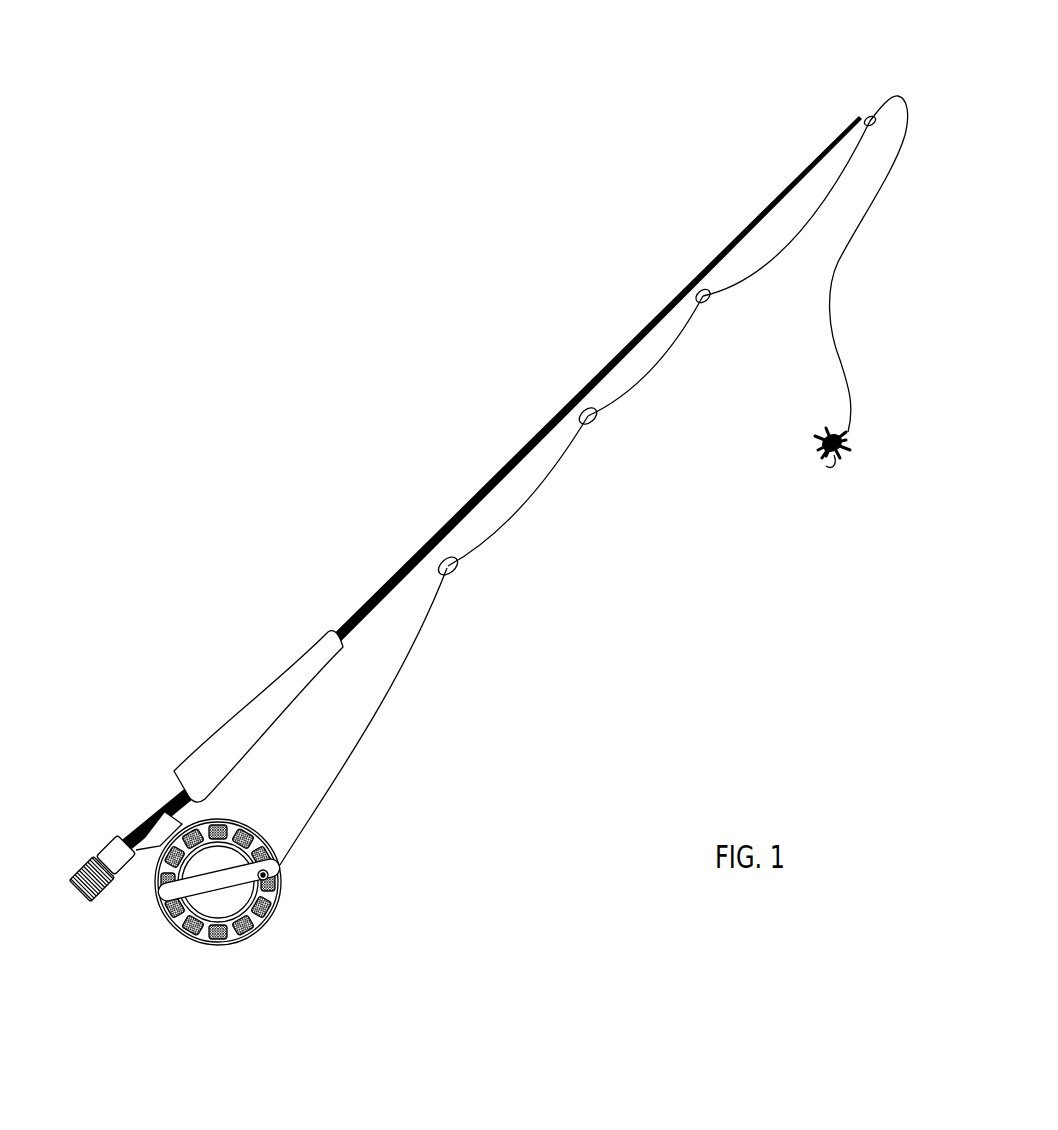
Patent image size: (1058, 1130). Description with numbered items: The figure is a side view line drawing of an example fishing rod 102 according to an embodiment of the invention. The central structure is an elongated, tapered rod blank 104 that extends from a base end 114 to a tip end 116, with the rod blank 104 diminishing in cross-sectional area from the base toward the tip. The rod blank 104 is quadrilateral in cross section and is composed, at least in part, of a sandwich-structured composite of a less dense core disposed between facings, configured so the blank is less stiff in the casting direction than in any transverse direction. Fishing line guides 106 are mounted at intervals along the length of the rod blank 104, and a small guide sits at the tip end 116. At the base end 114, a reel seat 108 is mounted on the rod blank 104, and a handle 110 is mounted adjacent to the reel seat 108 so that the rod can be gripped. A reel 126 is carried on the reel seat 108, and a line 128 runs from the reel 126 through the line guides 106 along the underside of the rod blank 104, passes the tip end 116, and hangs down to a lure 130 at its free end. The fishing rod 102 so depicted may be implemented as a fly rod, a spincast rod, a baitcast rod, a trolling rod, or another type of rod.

The fishing rod 102 is at (410, 382).
The rod blank 104 is at (778, 196).
The fishing line guides 106 is at (707, 307).
The reel seat 108 is at (157, 803).
The handle 110 is at (280, 653).
The base end 114 is at (113, 928).
The tip end 116 is at (830, 93).
The reel 126 is at (288, 883).
The line 128 is at (385, 728).
The lure 130 is at (815, 422).